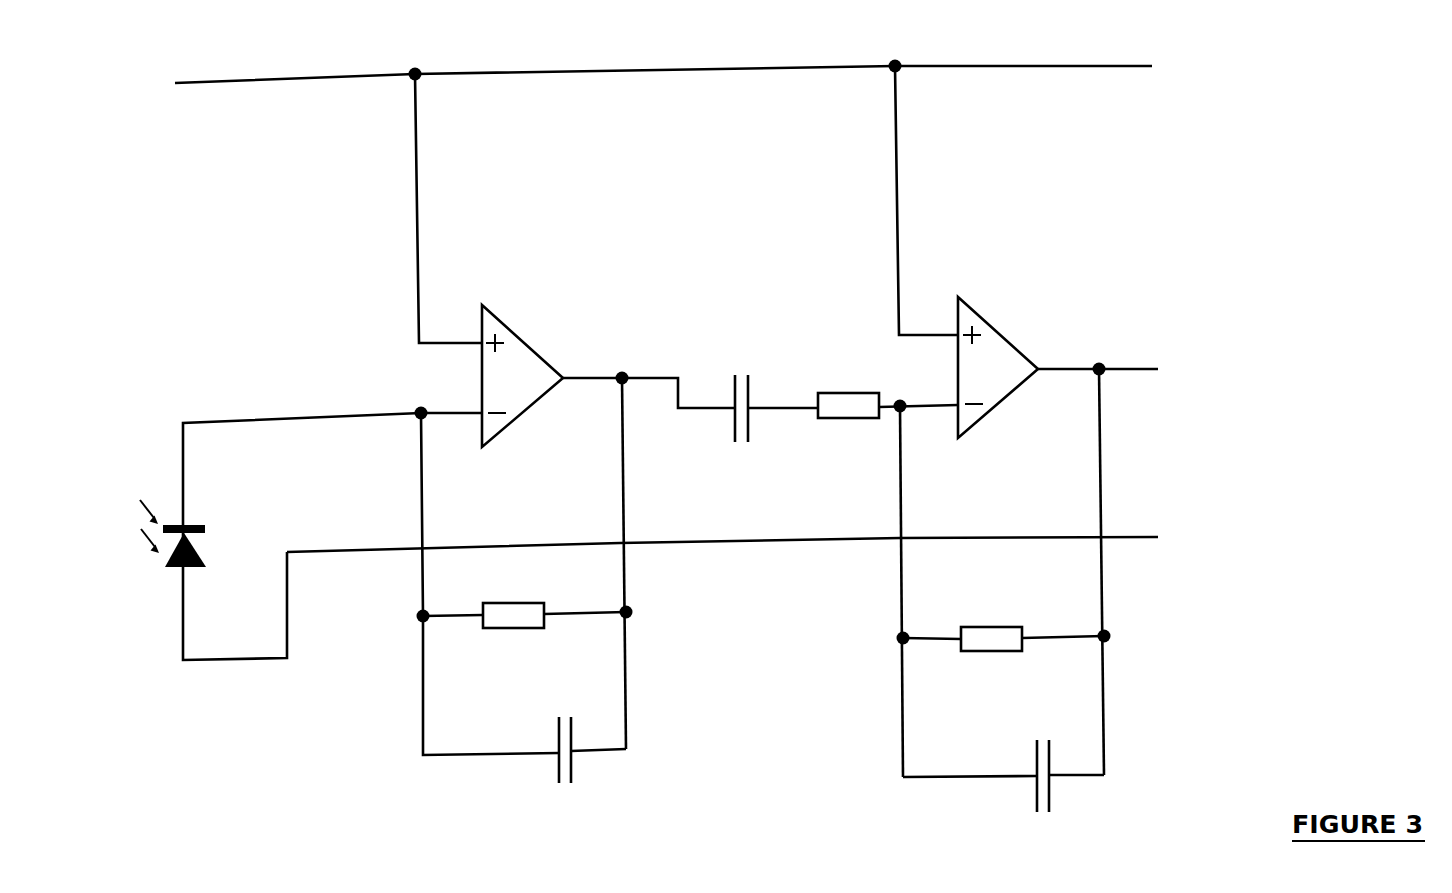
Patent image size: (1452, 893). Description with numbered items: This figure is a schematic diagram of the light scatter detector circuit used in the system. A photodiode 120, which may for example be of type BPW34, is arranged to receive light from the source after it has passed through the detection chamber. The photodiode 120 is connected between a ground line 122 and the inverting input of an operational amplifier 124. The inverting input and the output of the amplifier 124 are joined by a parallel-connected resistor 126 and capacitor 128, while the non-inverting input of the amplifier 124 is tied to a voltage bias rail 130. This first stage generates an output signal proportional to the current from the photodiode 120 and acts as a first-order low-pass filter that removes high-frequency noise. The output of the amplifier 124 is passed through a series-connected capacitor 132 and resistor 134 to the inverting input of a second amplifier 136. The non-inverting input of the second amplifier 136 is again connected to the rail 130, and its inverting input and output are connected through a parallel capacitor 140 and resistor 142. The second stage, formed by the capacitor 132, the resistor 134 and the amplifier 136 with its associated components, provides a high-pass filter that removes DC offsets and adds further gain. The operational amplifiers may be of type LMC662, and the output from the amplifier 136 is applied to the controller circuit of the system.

The photodiode 120 is at (204, 552).
The ground line 122 is at (755, 542).
The operational amplifier 124 is at (523, 342).
The resistor 126 is at (535, 602).
The capacitor 128 is at (573, 768).
The voltage bias rail 130 is at (983, 67).
The capacitor 132 is at (752, 383).
The resistor 134 is at (848, 393).
The second amplifier 136 is at (1003, 337).
The capacitor 140 is at (1052, 788).
The resistor 142 is at (1013, 625).